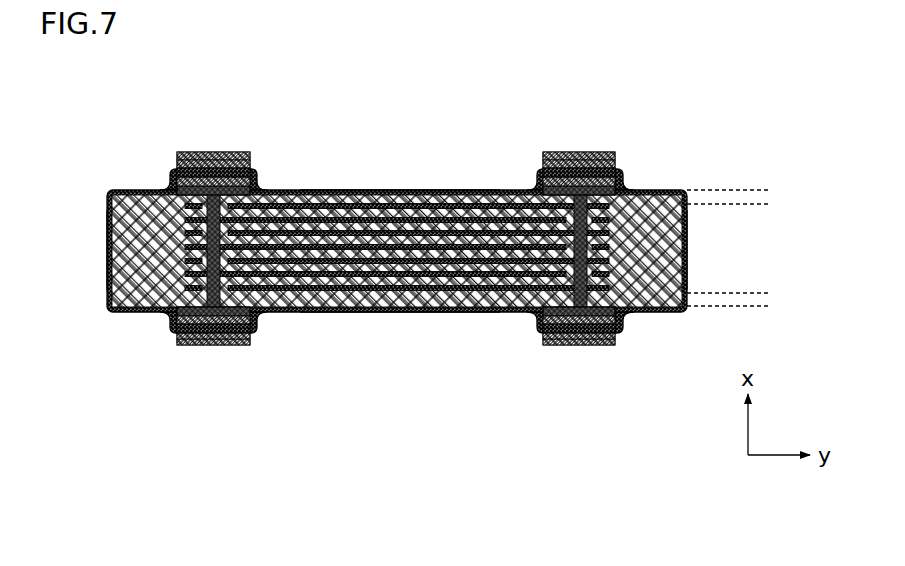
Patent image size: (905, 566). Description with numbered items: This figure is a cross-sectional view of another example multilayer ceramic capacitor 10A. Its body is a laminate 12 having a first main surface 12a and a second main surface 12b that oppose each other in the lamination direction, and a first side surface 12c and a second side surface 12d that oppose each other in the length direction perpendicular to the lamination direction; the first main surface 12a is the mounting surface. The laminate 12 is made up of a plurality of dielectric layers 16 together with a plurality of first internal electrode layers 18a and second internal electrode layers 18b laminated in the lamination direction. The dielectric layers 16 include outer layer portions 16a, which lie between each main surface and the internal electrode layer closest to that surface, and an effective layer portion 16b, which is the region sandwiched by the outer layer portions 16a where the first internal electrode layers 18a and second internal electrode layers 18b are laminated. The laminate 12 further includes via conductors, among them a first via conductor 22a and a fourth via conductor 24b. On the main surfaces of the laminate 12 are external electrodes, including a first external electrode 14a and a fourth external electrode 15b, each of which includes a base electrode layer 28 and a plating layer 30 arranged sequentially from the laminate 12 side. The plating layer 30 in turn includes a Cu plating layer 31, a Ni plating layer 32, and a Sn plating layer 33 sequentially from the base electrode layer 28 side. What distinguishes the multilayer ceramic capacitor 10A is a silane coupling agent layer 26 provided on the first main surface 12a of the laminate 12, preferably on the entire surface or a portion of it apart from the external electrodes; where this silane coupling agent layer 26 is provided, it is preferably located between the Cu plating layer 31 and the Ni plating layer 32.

The multilayer ceramic capacitor 10A is at (762, 101).
The laminate 12 is at (452, 258).
The first main surface 12a is at (442, 308).
The second main surface 12b is at (443, 194).
The first side surface 12c is at (683, 230).
The second side surface 12d is at (108, 223).
The first external electrode 14a is at (603, 147).
The fourth external electrode 15b is at (189, 147).
The dielectric layers 16 is at (490, 248).
The outer layer portions 16a is at (753, 249).
The effective layer portion 16b is at (754, 248).
The first internal electrode layers 18a is at (607, 234).
The second internal electrode layers 18b is at (190, 221).
The first via conductor 22a is at (607, 274).
The fourth via conductor 24b is at (192, 266).
The silane coupling agent layer 26 is at (366, 190).
The base electrode layer 28 is at (172, 182).
The plating layer 30 is at (396, 249).
The Cu plating layer 31 is at (190, 95).
The Ni plating layer 32 is at (232, 164).
The Sn plating layer 33 is at (216, 153).